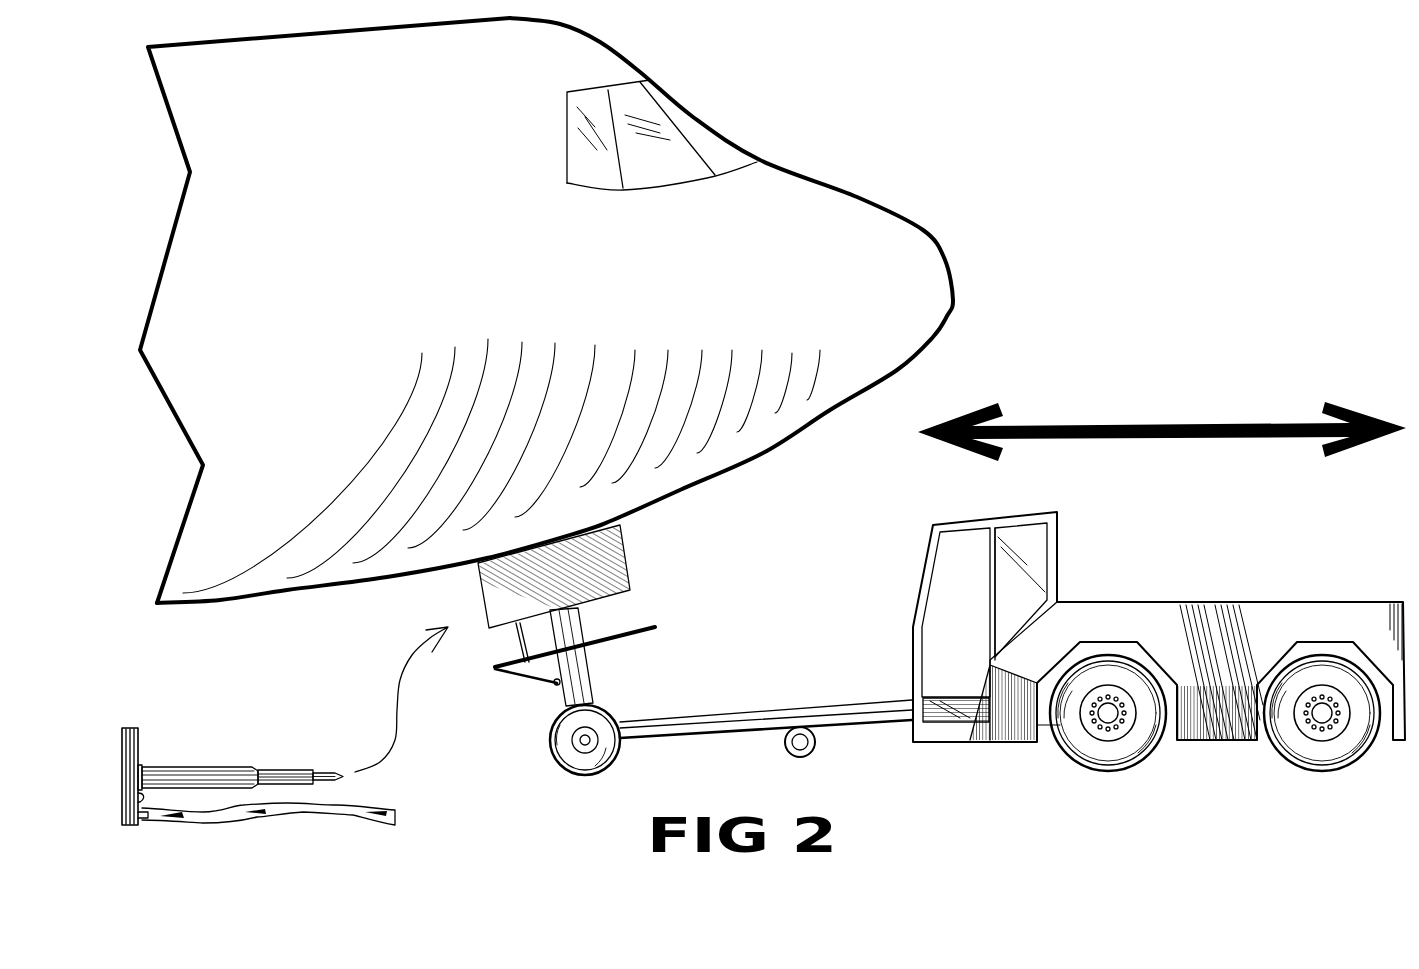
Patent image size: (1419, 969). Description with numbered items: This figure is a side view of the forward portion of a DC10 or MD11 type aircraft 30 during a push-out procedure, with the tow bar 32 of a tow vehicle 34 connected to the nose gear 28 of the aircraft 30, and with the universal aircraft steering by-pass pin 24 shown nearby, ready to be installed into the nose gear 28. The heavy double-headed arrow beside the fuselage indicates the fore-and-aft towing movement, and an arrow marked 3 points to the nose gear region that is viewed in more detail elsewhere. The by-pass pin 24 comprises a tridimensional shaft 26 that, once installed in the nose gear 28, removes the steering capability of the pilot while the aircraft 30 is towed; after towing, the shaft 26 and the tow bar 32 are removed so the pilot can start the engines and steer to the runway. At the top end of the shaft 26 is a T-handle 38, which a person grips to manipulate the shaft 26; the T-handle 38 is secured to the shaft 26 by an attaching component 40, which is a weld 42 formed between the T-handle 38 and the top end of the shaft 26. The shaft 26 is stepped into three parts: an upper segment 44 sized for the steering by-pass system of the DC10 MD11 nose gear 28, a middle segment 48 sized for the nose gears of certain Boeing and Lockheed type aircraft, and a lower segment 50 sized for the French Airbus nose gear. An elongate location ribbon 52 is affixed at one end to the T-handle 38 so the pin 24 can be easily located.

The direction of view of FIG. 3 is at (428, 617).
The universal aircraft steering by-pass pin 24 is at (236, 773).
The tridimensional shaft 26 is at (246, 742).
The nose gear 28 is at (593, 671).
The aircraft 30 is at (864, 191).
The tow bar 32 is at (732, 718).
The tow vehicle 34 is at (1253, 613).
The T-handle 38 is at (130, 826).
The attaching component 40 is at (143, 758).
The weld 42 is at (140, 795).
The upper segment 44 is at (230, 771).
The middle segment 48 is at (287, 771).
The lower segment 50 is at (323, 772).
The elongate location ribbon 52 is at (280, 813).